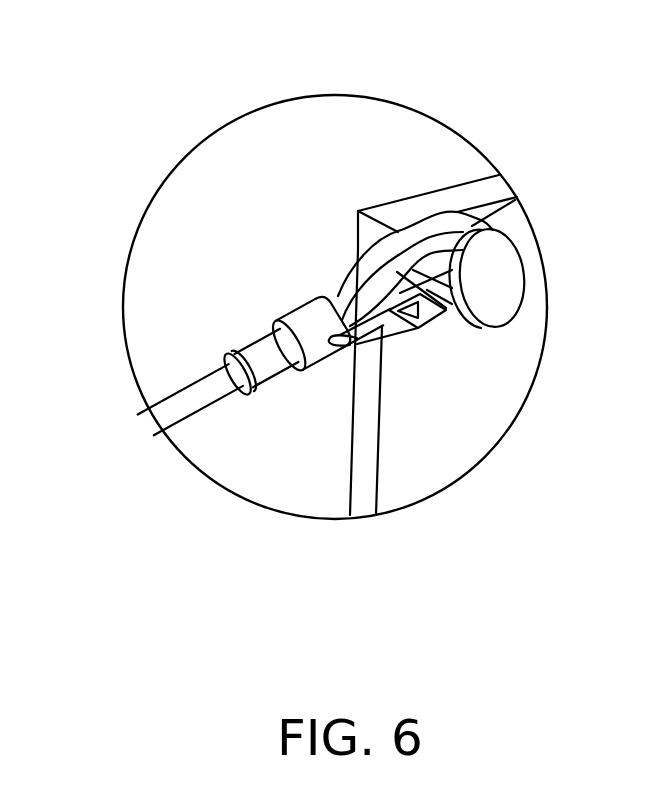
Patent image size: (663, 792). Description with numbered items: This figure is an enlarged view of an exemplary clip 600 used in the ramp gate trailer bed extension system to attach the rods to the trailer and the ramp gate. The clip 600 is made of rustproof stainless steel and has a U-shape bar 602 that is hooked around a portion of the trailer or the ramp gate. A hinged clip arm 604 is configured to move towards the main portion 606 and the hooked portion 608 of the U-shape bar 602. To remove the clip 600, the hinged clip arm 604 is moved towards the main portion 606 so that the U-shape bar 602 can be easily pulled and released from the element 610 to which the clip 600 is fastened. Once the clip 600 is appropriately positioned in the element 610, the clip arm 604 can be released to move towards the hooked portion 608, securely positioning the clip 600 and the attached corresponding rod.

The clip 600 is at (298, 225).
The U-shape bar 602 is at (513, 200).
The hinged clip arm 604 is at (398, 328).
The main portion 606 is at (412, 238).
The hooked portion 608 is at (437, 328).
The element 610 is at (493, 278).